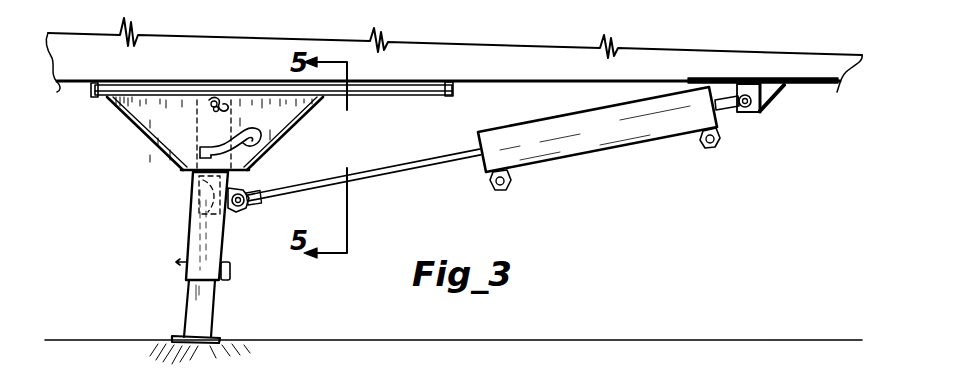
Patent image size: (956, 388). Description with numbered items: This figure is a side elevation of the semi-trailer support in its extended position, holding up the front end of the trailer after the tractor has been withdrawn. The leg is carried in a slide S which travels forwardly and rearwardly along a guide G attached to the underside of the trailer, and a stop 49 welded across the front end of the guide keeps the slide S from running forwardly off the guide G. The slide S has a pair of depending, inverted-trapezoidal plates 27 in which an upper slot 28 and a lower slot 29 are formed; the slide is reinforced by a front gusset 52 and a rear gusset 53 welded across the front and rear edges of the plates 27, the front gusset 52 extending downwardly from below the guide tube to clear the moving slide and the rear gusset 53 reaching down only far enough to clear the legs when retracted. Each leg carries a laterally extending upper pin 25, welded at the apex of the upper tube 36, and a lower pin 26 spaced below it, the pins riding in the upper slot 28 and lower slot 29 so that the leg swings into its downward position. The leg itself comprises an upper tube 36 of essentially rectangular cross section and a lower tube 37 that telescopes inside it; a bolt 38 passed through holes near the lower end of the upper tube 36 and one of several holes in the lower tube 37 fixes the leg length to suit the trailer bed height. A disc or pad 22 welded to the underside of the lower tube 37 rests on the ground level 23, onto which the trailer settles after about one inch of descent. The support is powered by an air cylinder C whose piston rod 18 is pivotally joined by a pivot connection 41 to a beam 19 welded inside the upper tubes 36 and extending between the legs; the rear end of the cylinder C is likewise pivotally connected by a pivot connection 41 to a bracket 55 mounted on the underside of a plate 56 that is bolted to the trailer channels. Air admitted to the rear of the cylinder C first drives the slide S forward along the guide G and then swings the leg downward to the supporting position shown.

The piston rod 18 is at (433, 170).
The beam 19 is at (196, 209).
The disc or pad 22 is at (217, 340).
The ground level 23 is at (325, 340).
The upper pin 25 is at (217, 109).
The lower pin 26 is at (188, 176).
The plates 27 is at (190, 121).
The upper slot 28 is at (208, 112).
The lower slot 29 is at (265, 146).
The upper tube 36 is at (187, 238).
The lower tube 37 is at (184, 312).
The bolt 38 is at (230, 268).
The pivot connection 41 is at (247, 200).
The stop 49 is at (94, 88).
The front gusset 52 is at (138, 133).
The rear gusset 53 is at (302, 125).
The bracket 55 is at (780, 90).
The plate 56 is at (690, 82).
The air cylinder C is at (616, 162).
The guide G is at (430, 83).
The slide S is at (220, 147).